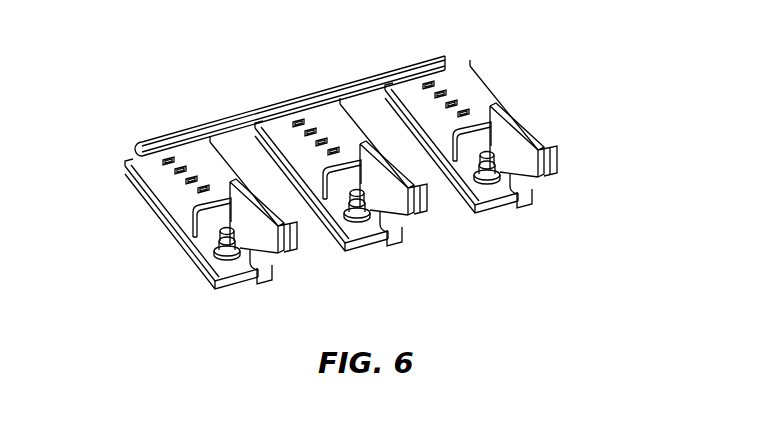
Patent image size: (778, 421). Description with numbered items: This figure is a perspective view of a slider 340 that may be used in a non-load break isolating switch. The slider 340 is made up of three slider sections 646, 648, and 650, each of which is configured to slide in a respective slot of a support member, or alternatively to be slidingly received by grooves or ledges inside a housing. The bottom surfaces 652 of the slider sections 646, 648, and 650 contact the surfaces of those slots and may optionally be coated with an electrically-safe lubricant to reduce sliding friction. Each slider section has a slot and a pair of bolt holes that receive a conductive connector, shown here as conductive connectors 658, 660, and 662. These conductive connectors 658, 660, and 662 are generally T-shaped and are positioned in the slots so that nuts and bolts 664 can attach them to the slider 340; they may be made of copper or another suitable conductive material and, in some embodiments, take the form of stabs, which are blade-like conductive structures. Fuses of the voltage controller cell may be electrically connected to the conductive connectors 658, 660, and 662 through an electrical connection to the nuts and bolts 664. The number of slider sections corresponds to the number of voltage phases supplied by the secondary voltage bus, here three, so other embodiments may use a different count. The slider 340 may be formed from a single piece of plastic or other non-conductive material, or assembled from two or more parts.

The slider 340 is at (512, 66).
The slider section 646 is at (202, 158).
The slider section 648 is at (310, 133).
The slider section 650 is at (418, 107).
The bottom surfaces 652 is at (152, 212).
The conductive connector 658 is at (265, 255).
The conductive connector 660 is at (397, 215).
The conductive connector 662 is at (530, 178).
The nuts and bolts 664 is at (213, 238).